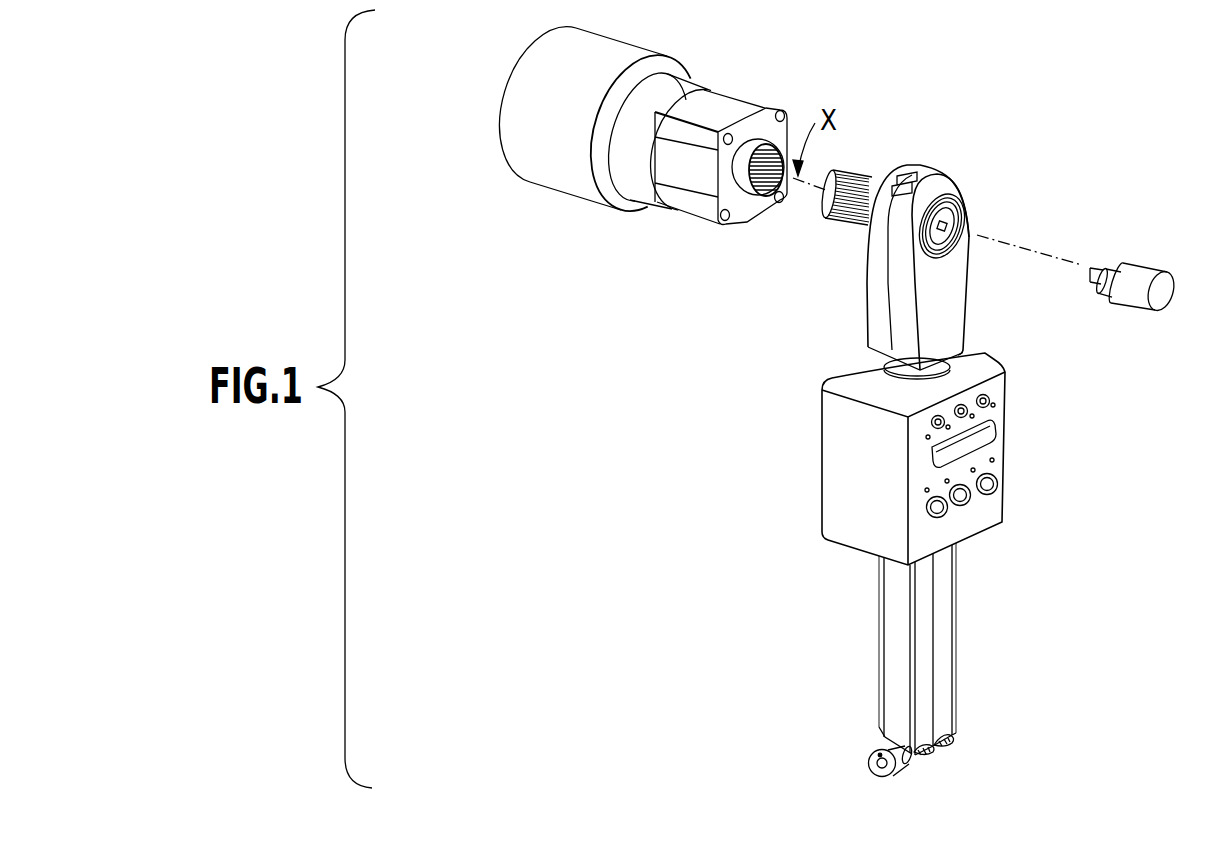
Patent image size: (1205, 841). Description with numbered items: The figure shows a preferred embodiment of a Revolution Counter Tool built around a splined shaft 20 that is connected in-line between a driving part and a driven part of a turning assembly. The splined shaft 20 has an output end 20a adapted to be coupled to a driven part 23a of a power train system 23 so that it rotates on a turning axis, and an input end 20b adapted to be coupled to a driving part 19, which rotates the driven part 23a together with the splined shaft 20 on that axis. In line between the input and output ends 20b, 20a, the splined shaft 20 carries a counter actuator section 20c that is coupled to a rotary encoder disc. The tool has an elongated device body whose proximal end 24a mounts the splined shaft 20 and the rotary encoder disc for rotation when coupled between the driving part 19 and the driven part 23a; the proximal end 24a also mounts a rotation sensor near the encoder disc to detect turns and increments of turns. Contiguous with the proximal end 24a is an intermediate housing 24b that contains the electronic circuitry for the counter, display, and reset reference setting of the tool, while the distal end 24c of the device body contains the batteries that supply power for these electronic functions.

The driving part 19 is at (1135, 283).
The splined shaft 20 is at (850, 224).
The output end 20a is at (853, 172).
The input end 20b is at (965, 215).
The counter actuator section 20c is at (922, 172).
The power train system 23 is at (537, 86).
The driven part 23a is at (764, 136).
The proximal end 24a is at (970, 294).
The intermediate housing 24b is at (863, 465).
The distal end 24c is at (903, 660).